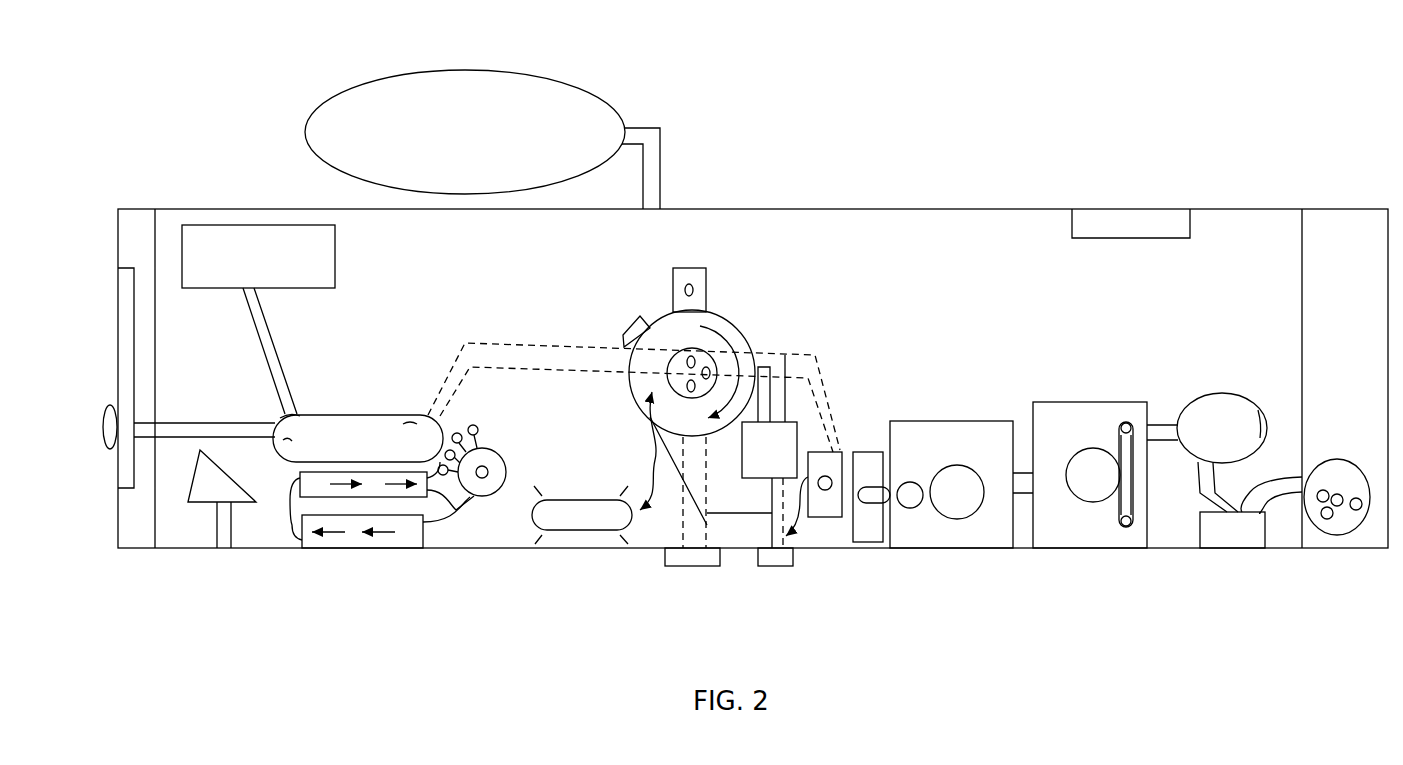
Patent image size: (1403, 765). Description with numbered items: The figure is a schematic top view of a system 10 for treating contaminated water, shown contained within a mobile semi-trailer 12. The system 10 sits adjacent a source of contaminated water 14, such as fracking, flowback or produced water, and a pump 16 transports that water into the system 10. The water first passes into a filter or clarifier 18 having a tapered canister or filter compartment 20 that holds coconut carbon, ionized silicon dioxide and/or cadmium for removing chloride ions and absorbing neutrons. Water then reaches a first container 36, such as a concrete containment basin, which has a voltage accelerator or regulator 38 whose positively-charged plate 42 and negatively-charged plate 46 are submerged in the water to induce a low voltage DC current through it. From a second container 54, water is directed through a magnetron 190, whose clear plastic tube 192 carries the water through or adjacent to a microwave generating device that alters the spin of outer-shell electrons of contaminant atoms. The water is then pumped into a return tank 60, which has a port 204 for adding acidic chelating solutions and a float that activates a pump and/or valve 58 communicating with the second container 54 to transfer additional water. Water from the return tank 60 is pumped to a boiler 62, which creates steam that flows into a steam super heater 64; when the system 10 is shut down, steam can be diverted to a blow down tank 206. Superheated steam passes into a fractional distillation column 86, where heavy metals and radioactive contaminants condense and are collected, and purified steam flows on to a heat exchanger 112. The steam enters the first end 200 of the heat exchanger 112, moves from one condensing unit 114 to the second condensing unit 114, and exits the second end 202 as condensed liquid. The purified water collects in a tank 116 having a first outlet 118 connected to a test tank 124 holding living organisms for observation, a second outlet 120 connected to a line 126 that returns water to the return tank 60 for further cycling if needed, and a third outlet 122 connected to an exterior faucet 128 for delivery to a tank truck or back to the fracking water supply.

The system 10 is at (1045, 113).
The mobile semi-trailer 12 is at (226, 206).
The source of contaminated water 14 is at (1340, 459).
The pump 16 is at (1235, 548).
The filter or clarifier 18 is at (1211, 392).
The tapered canister or filter compartment 20 is at (1263, 416).
The first container 36 is at (1073, 402).
The voltage accelerator or regulator 38 is at (1134, 502).
The positively-charged plate 42 is at (1126, 422).
The negatively-charged plate 46 is at (1126, 527).
The second container 54 is at (955, 421).
The pump and/or valve 58 is at (907, 482).
The return tank 60 is at (847, 452).
The boiler 62 is at (745, 323).
The steam super heater 64 is at (573, 532).
The fractional distillation separator or column 86 is at (505, 451).
The condenser or heat exchanger 112 is at (357, 552).
The condensing unit 114 is at (298, 478).
The tank 116 is at (372, 413).
The first outlet 118 is at (298, 416).
The second outlet 120 is at (405, 425).
The third outlet 122 is at (283, 441).
The test tank 124 is at (335, 255).
The line 126 is at (518, 343).
The exterior faucet 128 is at (103, 420).
The magnetron 190 is at (872, 452).
The clear plastic pipe or tube 192 is at (825, 490).
The first end 200 is at (433, 548).
The second end 202 is at (455, 512).
The port 204 is at (806, 548).
The blow down tank 206 is at (752, 478).